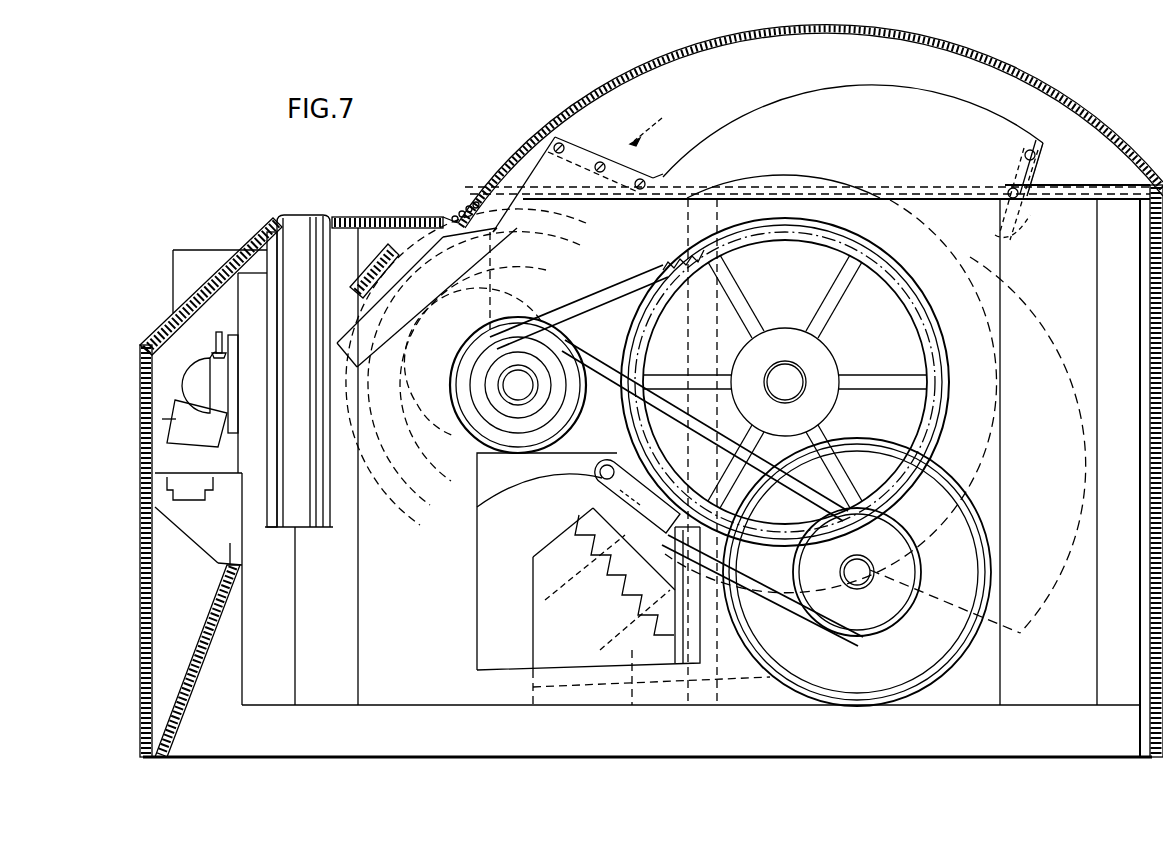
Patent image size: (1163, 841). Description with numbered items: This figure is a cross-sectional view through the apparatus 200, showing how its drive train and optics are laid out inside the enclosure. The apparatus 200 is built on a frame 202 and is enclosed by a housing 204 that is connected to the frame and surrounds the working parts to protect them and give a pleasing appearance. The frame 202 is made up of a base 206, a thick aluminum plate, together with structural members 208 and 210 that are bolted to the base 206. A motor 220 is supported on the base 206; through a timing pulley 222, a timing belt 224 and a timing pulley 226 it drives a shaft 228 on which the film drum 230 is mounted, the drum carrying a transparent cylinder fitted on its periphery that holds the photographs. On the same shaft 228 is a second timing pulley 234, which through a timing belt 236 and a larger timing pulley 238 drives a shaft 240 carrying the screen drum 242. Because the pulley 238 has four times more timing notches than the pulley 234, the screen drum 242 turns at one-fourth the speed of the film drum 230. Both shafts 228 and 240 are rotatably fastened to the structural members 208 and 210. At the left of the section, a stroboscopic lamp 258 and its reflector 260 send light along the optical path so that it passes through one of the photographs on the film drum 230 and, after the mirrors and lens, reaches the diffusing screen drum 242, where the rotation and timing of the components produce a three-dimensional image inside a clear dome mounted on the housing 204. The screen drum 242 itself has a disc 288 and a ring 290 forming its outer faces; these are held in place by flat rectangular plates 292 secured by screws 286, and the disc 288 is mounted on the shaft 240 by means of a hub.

The apparatus 200 is at (496, 152).
The frame 202 is at (240, 770).
The housing 204 is at (142, 590).
The base 206 is at (395, 770).
The structural member 208 is at (1135, 630).
The structural member 210 is at (430, 576).
The motor 220 is at (897, 668).
The timing pulley 222 is at (900, 575).
The timing belt 224 is at (784, 604).
The timing pulley 226 is at (466, 367).
The shaft 228 is at (530, 398).
The film drum 230 is at (450, 222).
The timing pulley 234 is at (482, 418).
The timing belt 236 is at (606, 262).
The timing pulley 238 is at (930, 384).
The shaft 240 is at (795, 350).
The screen drum 242 is at (808, 96).
The stroboscopic lamp 258 is at (214, 348).
The reflector 260 is at (190, 380).
The screws 286 is at (562, 140).
The disc 288 is at (742, 178).
The ring 290 is at (755, 124).
The flat rectangular plates 292 is at (643, 181).